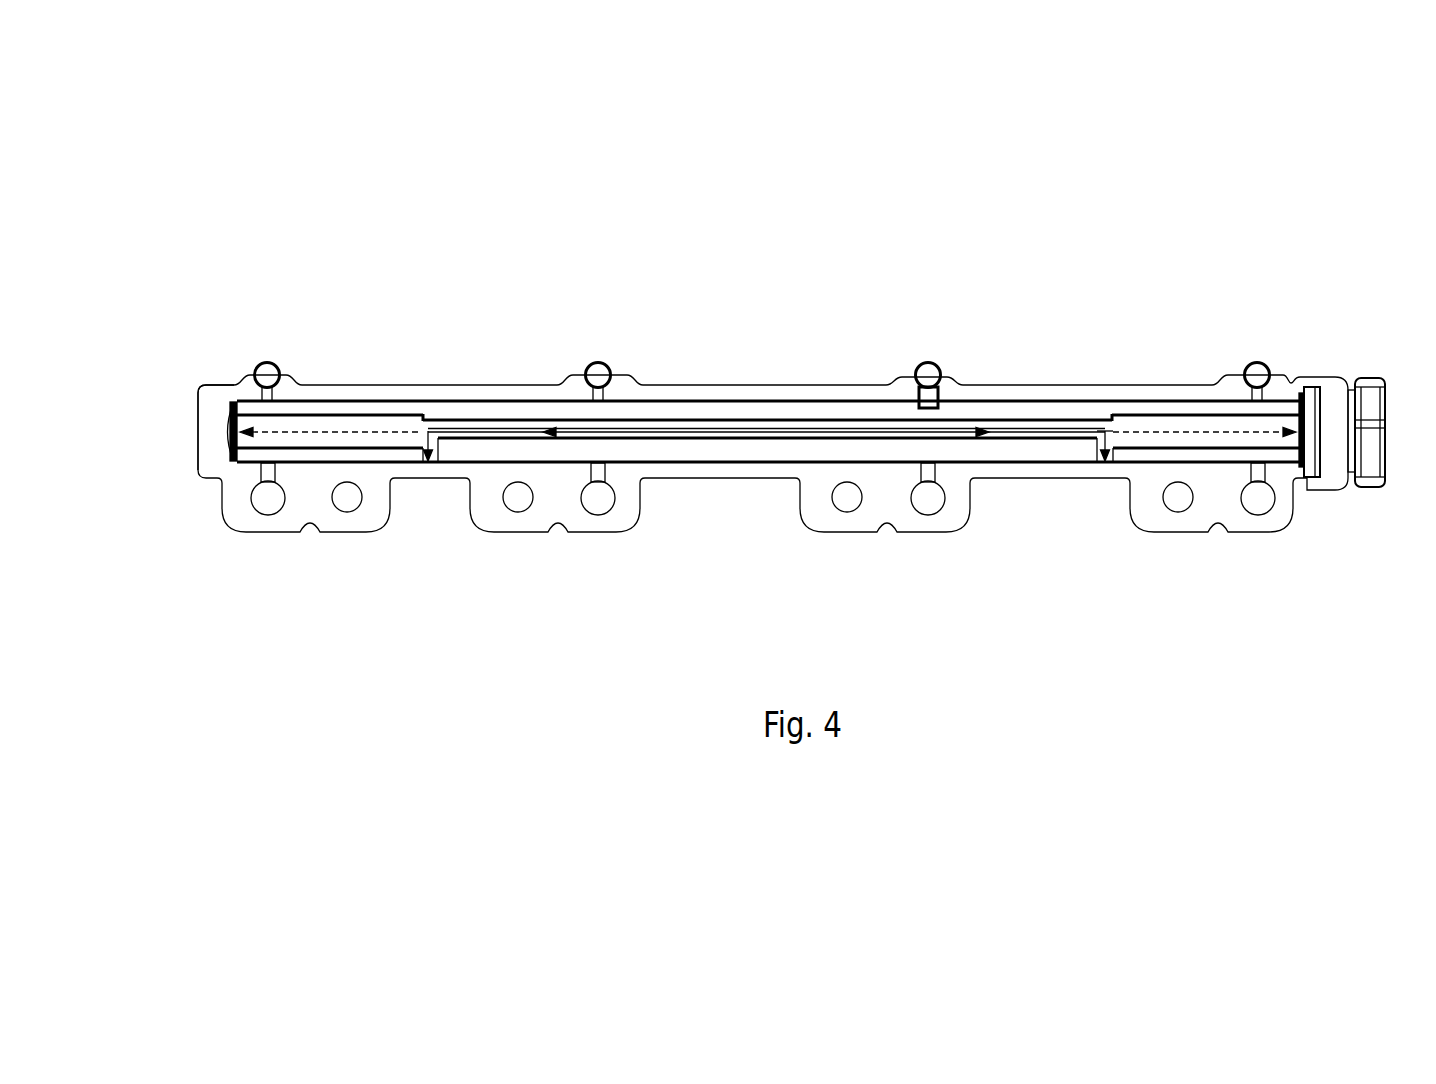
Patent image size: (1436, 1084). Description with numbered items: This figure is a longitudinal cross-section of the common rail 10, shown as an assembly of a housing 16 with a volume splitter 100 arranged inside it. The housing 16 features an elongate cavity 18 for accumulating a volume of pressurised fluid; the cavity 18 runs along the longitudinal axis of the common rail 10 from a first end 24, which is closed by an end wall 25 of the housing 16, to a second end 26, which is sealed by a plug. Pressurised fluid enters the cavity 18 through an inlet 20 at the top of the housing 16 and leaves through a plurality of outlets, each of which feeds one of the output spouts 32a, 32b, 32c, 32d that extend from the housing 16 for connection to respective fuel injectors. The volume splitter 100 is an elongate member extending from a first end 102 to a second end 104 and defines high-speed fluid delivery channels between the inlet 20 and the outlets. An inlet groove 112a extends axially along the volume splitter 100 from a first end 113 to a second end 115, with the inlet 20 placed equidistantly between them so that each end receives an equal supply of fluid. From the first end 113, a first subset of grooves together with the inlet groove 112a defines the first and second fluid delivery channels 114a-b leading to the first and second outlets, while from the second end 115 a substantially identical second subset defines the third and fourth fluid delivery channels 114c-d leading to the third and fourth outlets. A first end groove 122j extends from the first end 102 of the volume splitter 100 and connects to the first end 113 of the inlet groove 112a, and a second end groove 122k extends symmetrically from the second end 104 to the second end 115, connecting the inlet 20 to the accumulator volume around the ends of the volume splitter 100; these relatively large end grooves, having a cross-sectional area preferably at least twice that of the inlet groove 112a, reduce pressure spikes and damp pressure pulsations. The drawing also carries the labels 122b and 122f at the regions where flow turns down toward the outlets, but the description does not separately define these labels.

The common rail 10 is at (773, 395).
The housing 16 is at (768, 339).
The cavity 18 is at (909, 350).
The inlet 20 is at (767, 493).
The first end 24 is at (209, 495).
The end wall 25 is at (207, 377).
The second end 26 is at (1309, 499).
The output spout 32a is at (252, 556).
The output spout 32b is at (614, 537).
The output spout 32c is at (942, 536).
The output spout 32d is at (1245, 525).
The volume splitter 100 is at (768, 526).
The first end 102 is at (261, 357).
The second end 104 is at (1341, 383).
The inlet groove 112a is at (767, 367).
The first end 113 is at (359, 387).
The first and second fluid delivery channels 114a-b is at (594, 382).
The third and fourth fluid delivery channels 114c-d is at (932, 382).
The second end 115 is at (1174, 392).
The outlet port 122b is at (453, 504).
The outlet port 122f is at (1071, 505).
The first end groove 122j is at (330, 517).
The second end groove 122k is at (1204, 515).